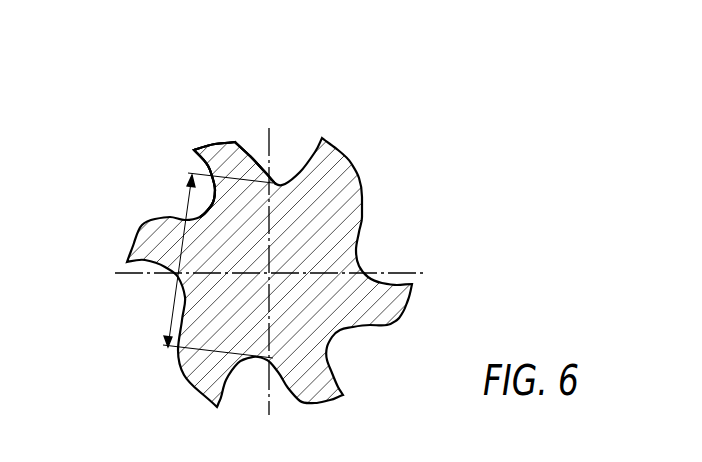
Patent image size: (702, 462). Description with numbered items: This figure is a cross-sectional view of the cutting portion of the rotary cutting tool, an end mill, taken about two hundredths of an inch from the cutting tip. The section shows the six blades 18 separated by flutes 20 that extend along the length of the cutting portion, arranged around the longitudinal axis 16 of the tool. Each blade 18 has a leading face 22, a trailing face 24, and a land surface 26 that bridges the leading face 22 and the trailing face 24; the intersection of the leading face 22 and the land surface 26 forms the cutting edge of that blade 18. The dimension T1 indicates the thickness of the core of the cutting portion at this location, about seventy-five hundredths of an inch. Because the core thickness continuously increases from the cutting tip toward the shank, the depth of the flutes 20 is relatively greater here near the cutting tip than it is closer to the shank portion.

The longitudinal axis 16 is at (270, 272).
The blade 18 is at (200, 138).
The flute 20 is at (297, 132).
The leading face 22 is at (200, 163).
The trailing face 24 is at (247, 163).
The land surface 26 is at (217, 143).
The core thickness T1 is at (187, 207).